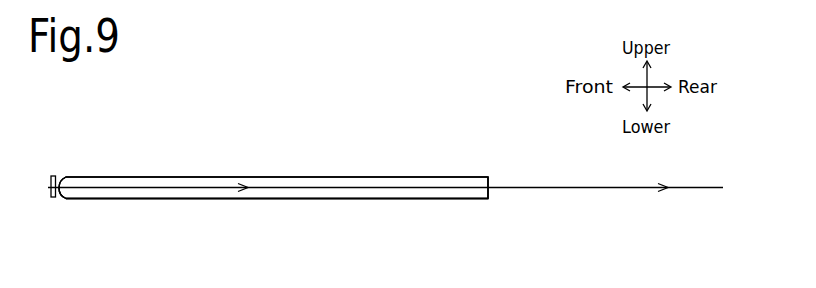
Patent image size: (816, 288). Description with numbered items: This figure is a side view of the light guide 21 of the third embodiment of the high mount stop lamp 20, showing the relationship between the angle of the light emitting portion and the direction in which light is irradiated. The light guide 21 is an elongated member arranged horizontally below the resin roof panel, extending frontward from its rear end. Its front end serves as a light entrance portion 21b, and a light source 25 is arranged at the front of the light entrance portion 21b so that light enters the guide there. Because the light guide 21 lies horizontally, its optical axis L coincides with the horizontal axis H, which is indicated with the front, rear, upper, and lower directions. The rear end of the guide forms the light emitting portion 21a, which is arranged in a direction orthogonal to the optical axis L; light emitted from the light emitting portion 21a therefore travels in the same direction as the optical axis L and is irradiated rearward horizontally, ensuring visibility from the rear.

The high mount stop lamp 20 is at (273, 188).
The light guide 21 is at (222, 177).
The light emitting portion 21a is at (490, 178).
The light entrance portion 21b is at (63, 200).
The light source 25 is at (58, 178).
The optical axis L is at (173, 199).
The horizontal axis H is at (396, 189).